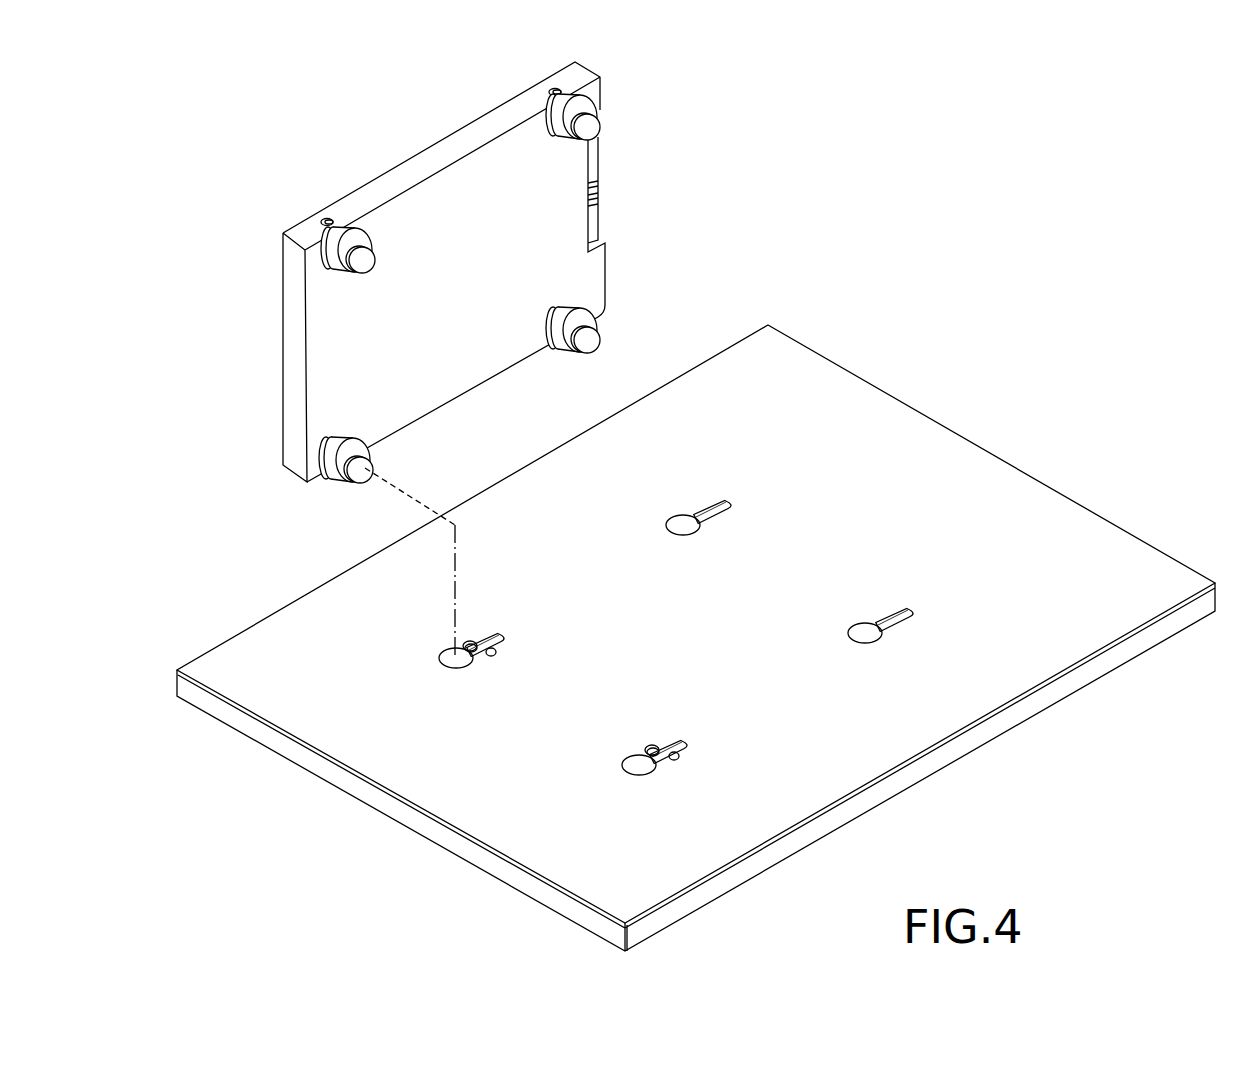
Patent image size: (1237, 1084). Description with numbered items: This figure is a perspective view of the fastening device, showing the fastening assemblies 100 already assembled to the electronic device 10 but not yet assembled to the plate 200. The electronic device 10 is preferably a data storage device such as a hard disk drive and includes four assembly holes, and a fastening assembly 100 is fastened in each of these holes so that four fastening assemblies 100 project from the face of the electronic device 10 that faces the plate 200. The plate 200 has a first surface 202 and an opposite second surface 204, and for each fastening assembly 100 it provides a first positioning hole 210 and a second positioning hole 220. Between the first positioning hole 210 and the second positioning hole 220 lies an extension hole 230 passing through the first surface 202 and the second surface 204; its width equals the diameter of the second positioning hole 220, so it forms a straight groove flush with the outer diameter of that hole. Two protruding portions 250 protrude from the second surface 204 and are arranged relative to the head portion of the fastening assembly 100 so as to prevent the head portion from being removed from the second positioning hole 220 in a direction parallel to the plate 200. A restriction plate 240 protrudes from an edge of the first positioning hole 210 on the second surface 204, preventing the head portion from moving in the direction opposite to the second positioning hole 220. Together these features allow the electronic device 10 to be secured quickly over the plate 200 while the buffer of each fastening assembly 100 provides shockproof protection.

The electronic device 10 is at (413, 162).
The fastening assembly 100 is at (327, 487).
The plate 200 is at (701, 638).
The first surface 202 is at (1090, 543).
The second surface 204 is at (1145, 653).
The first positioning hole 210 is at (626, 593).
The second positioning hole 220 is at (723, 503).
The extension hole 230 is at (693, 517).
The restriction plate 240 is at (668, 534).
The protruding portion 250 is at (496, 650).